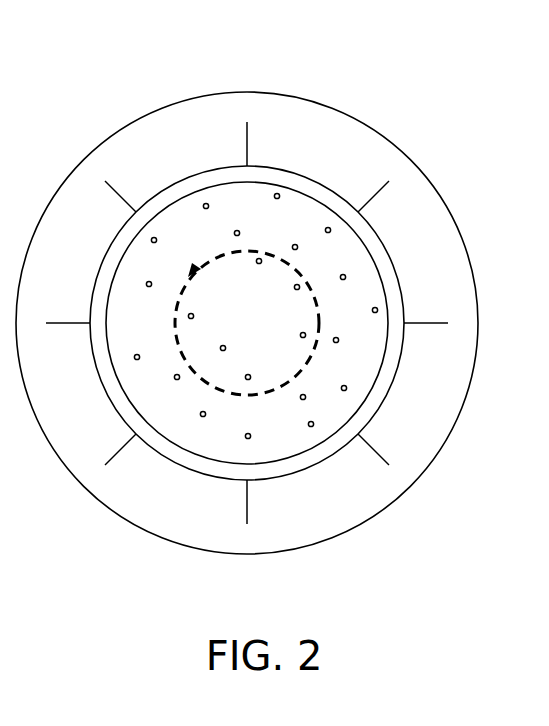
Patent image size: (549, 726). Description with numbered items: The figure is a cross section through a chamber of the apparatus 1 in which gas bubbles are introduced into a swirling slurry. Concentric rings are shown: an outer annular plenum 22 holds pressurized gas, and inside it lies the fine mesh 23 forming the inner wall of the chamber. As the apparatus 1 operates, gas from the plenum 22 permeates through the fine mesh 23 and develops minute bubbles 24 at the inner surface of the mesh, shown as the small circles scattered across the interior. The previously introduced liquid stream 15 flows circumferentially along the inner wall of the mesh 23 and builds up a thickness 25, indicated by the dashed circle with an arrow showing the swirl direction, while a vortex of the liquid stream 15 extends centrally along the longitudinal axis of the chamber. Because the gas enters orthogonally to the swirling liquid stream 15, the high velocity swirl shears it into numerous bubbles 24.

The apparatus 1 is at (130, 72).
The plenum 22 is at (126, 143).
The fine mesh 23 is at (225, 167).
The minute bubbles 24 is at (302, 193).
The liquid stream 15 is at (355, 253).
The thickness 25 is at (318, 303).